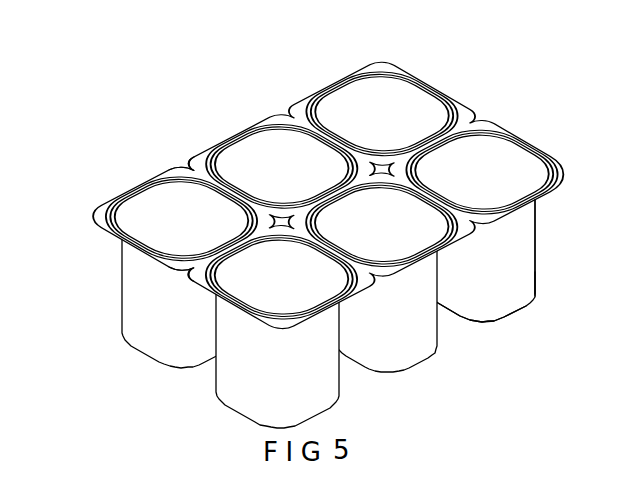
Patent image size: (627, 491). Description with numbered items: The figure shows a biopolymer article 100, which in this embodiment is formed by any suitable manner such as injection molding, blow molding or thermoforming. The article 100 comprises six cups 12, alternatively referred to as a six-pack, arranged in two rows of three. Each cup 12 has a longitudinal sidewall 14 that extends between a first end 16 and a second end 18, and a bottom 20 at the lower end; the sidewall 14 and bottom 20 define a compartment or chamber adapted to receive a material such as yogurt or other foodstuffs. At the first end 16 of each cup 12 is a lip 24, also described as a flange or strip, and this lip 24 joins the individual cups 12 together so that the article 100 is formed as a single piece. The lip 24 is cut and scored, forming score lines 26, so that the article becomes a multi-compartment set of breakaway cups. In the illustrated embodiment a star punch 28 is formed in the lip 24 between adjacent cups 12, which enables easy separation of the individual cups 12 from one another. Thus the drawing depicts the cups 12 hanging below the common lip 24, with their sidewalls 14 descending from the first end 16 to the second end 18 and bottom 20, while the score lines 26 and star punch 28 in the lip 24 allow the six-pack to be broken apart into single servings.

The biopolymer article 100 is at (339, 243).
The cup 12 is at (310, 370).
The longitudinal sidewall 14 is at (536, 258).
The first end 16 is at (521, 214).
The second end 18 is at (536, 295).
The bottom 20 is at (480, 323).
The lip 24 is at (560, 178).
The score lines 26 is at (188, 274).
The star punch 28 is at (186, 166).